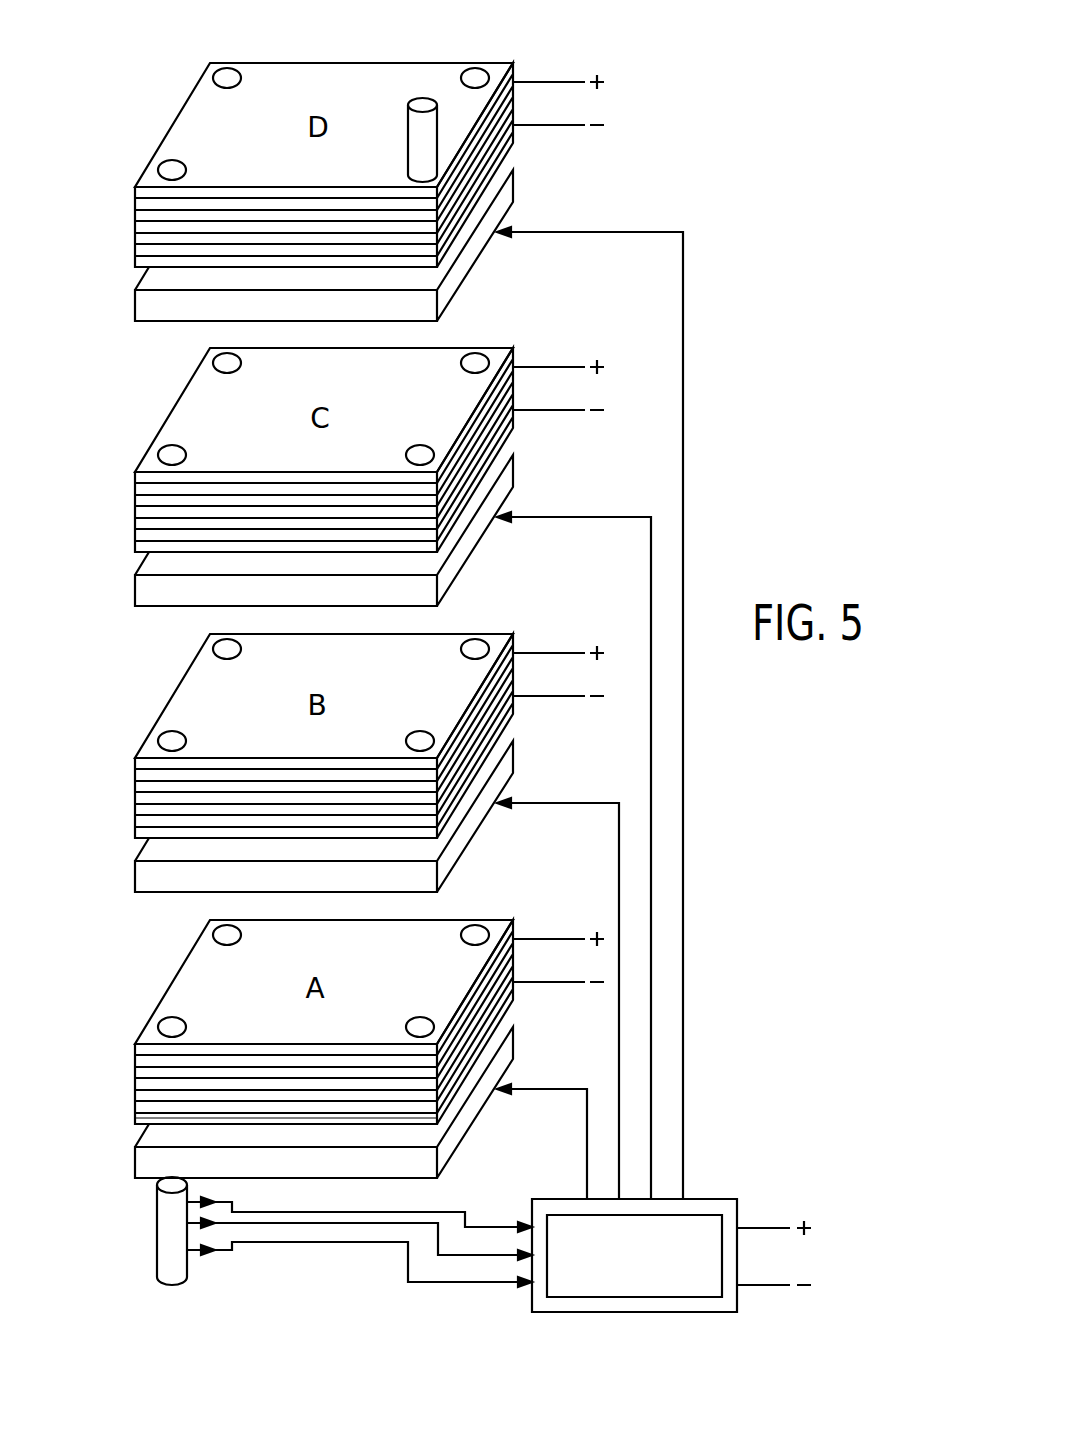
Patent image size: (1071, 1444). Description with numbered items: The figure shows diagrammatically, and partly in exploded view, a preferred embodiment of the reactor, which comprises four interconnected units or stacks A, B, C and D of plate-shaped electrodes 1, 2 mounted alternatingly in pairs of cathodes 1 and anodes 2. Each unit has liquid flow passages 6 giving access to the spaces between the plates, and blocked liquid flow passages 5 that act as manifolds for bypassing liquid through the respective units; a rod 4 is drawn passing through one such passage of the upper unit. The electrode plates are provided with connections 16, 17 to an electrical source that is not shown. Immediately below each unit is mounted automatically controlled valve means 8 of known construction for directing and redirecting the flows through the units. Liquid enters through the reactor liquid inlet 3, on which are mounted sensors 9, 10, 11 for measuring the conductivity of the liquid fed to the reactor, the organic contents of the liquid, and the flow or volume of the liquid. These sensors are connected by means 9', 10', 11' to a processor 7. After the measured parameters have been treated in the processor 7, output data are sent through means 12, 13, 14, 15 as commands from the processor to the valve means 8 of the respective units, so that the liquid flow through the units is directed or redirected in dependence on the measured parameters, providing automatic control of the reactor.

The cathode 1 is at (150, 1112).
The anode 2 is at (148, 1096).
The reactor liquid inlet 3 is at (156, 1243).
The tie rod 4 is at (408, 130).
The blocked liquid flow passage 5 is at (225, 70).
The liquid flow passage 6 is at (160, 165).
The processor 7 is at (528, 1300).
The valve means 8 is at (475, 258).
The sensor 9 is at (243, 1272).
The connecting means 9' is at (412, 1270).
The sensor 10 is at (258, 1203).
The connecting means 10' is at (431, 1250).
The sensor 11 is at (258, 1180).
The connecting means 11' is at (431, 1207).
The command means 12 is at (585, 1140).
The command means 13 is at (619, 1100).
The command means 14 is at (651, 1030).
The command means 15 is at (683, 957).
The electrical connection 16 is at (547, 939).
The electrical connection 17 is at (547, 982).